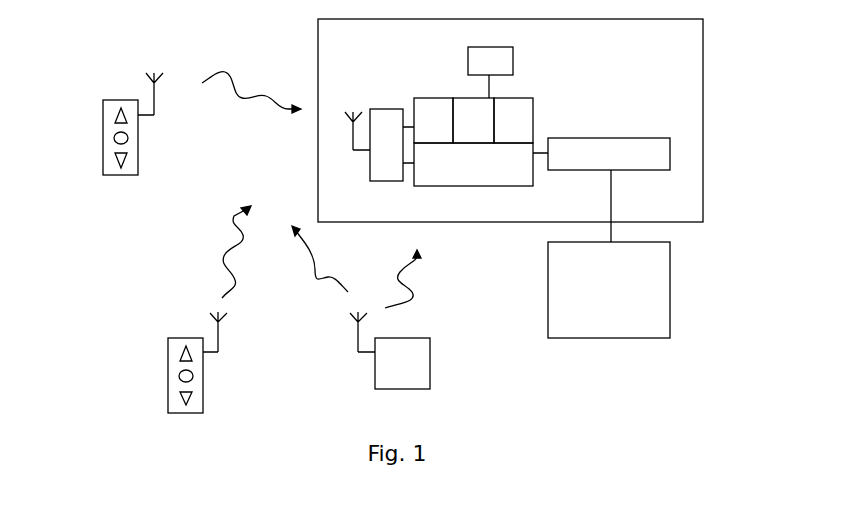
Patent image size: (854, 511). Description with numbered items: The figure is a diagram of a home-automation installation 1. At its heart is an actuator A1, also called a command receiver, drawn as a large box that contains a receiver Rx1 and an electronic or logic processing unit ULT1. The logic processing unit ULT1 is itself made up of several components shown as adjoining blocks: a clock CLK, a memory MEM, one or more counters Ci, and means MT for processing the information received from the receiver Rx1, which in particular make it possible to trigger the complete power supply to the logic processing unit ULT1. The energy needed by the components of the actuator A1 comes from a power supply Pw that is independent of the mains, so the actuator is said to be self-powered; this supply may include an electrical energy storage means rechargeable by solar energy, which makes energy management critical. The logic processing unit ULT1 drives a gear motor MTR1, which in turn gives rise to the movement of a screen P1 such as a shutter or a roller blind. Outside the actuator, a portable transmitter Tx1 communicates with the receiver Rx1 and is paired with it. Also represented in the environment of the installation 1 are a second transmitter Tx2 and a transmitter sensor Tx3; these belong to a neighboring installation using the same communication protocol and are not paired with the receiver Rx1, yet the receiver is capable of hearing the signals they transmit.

The installation 1 is at (476, 369).
The actuator A1 is at (525, 120).
The power supply Pw is at (490, 62).
The clock CLK is at (433, 120).
The memory MEM is at (473, 120).
The counters Ci is at (513, 120).
The means for processing the information received from the receiver MT is at (473, 164).
The logic processing unit ULT1 is at (475, 169).
The receiver Rx1 is at (366, 148).
The gear motor MTR1 is at (613, 177).
The screen P1 is at (621, 290).
The portable transmitter Tx1 is at (180, 123).
The second transmitter Tx2 is at (190, 309).
The transmitter sensor Tx3 is at (361, 313).